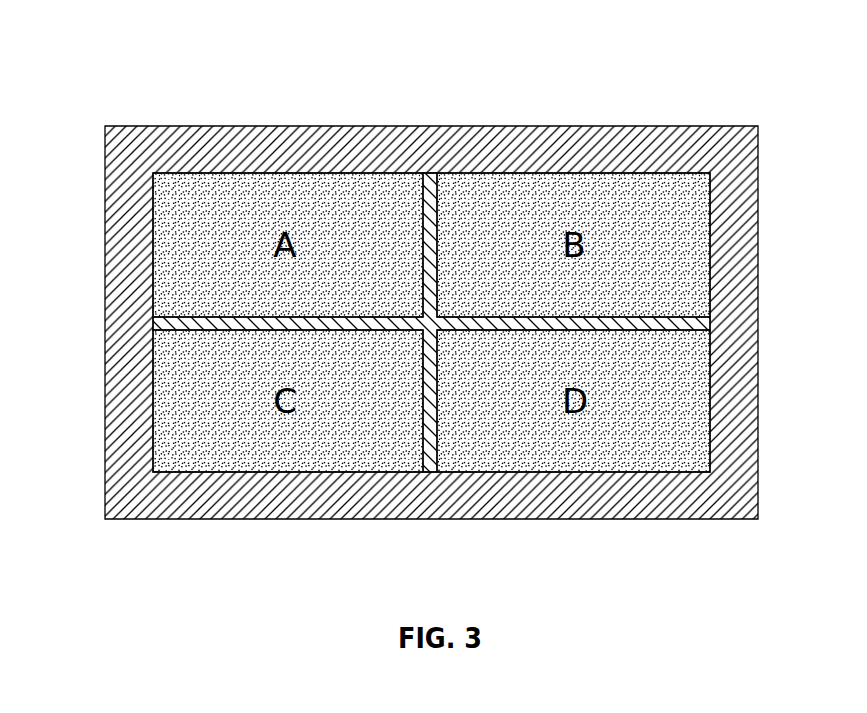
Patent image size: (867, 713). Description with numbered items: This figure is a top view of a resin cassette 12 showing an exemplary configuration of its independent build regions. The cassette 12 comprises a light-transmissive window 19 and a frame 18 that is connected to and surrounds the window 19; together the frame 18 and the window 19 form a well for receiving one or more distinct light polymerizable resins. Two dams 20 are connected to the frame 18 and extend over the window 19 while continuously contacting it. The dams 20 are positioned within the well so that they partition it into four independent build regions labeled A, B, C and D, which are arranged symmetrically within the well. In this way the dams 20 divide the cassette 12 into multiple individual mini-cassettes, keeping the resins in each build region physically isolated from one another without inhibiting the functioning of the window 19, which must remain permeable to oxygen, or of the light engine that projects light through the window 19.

The resin cassette 12 is at (166, 54).
The frame 18 is at (160, 519).
The light-transmissive window 19 is at (183, 275).
The dam 20 is at (432, 173).